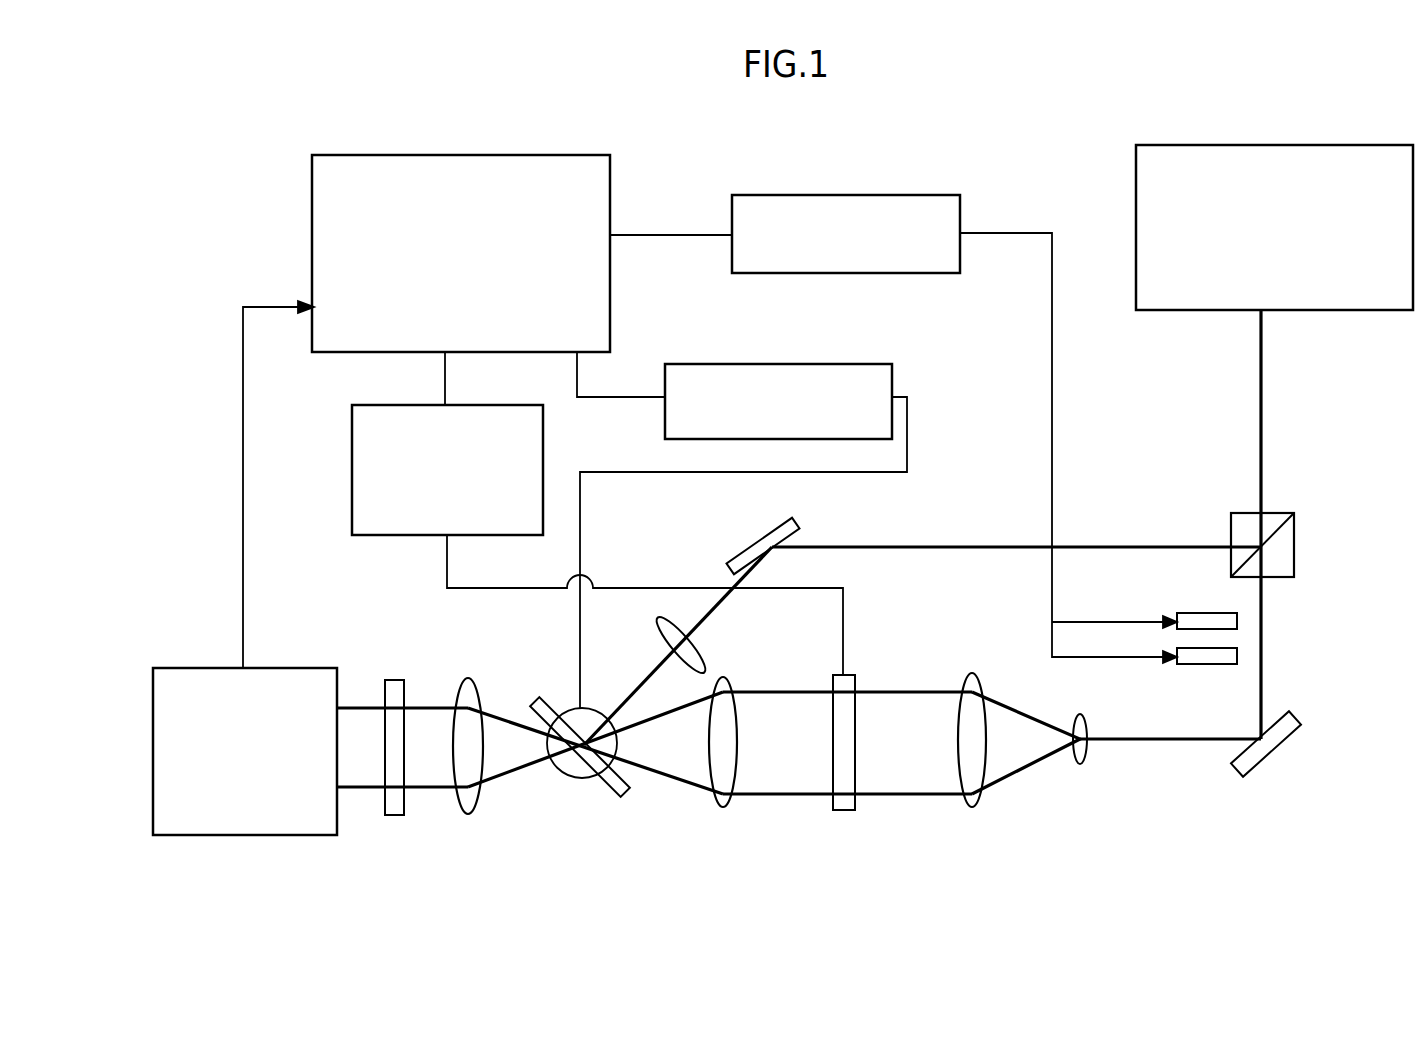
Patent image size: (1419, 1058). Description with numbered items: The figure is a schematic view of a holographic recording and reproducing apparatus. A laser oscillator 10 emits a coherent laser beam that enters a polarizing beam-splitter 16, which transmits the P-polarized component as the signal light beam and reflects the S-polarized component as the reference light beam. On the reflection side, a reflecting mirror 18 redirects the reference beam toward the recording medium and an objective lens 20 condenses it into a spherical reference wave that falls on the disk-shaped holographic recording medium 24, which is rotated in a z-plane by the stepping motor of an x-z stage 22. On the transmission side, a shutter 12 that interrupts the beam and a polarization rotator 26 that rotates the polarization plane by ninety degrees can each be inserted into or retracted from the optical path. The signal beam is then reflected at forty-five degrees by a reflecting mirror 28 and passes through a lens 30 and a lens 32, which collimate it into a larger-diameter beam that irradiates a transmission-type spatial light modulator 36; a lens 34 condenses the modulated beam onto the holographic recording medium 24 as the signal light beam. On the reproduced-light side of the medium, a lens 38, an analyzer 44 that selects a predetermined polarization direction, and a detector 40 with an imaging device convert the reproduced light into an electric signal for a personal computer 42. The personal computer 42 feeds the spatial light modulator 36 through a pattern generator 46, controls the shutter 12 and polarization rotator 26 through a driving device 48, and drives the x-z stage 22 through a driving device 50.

The laser oscillator 10 is at (1342, 143).
The shutter 12 is at (1199, 612).
The polarizing beam-splitter 16 is at (1296, 549).
The reflecting mirror 18 is at (742, 550).
The objective lens 20 is at (706, 652).
The x-z stage 22 is at (552, 772).
The holographic recording medium 24 is at (610, 791).
The polarization rotator 26 is at (1199, 665).
The reflecting mirror 28 is at (1272, 759).
The lens 30 is at (1080, 765).
The lens 32 is at (968, 808).
The lens 34 is at (722, 808).
The spatial light modulator 36 is at (843, 812).
The lens 38 is at (467, 816).
The detector 40 is at (247, 837).
The personal computer 42 is at (468, 165).
The analyzer 44 is at (392, 817).
The pattern generator 46 is at (383, 537).
The driving device 48 is at (906, 193).
The driving device 50 is at (849, 363).